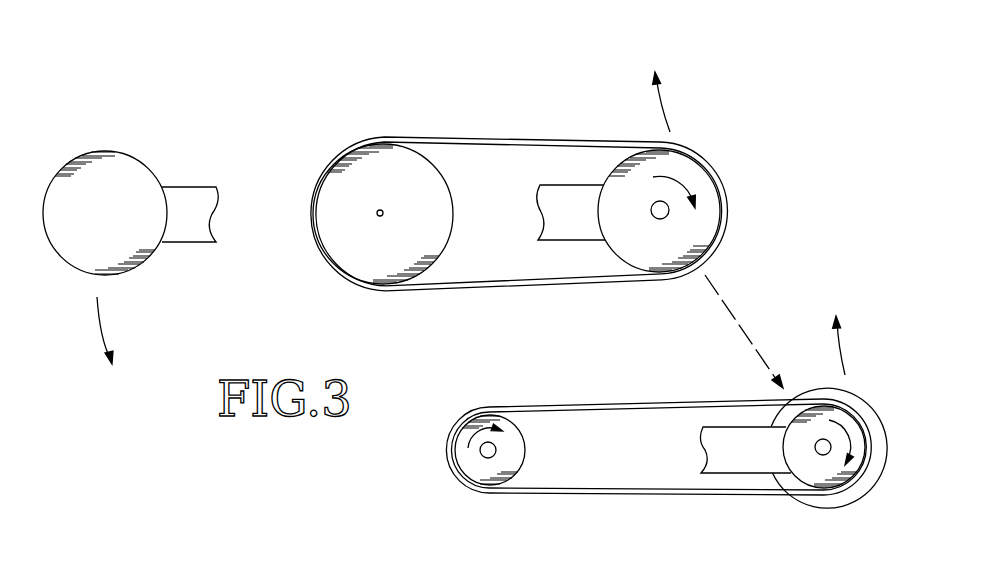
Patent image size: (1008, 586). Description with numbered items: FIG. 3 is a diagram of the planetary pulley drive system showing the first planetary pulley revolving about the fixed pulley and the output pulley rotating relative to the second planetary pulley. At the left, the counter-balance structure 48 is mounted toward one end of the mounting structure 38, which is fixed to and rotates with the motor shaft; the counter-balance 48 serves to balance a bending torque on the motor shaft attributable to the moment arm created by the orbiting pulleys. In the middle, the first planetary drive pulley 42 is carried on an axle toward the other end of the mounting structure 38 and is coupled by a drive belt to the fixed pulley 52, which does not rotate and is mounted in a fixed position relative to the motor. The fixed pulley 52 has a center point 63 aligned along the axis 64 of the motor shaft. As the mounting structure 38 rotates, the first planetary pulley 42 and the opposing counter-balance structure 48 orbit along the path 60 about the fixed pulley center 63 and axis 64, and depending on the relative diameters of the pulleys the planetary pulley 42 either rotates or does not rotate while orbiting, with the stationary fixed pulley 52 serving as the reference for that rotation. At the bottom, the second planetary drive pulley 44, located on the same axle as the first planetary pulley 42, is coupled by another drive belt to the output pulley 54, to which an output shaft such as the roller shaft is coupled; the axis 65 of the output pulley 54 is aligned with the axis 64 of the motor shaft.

The counter-balance structure 48 is at (133, 155).
The mounting structure 38 is at (193, 187).
The path 60 is at (105, 328).
The fixed pulley 52 is at (452, 198).
The center point 63 is at (385, 186).
The axis 64 is at (400, 178).
The first planetary drive pulley 42 is at (705, 186).
The output pulley 54 is at (525, 448).
The axis 65 is at (483, 455).
The second planetary drive pulley 44 is at (852, 468).